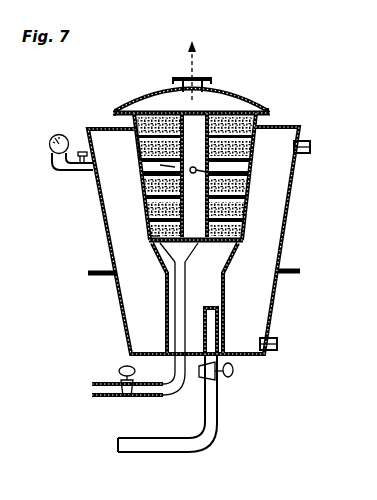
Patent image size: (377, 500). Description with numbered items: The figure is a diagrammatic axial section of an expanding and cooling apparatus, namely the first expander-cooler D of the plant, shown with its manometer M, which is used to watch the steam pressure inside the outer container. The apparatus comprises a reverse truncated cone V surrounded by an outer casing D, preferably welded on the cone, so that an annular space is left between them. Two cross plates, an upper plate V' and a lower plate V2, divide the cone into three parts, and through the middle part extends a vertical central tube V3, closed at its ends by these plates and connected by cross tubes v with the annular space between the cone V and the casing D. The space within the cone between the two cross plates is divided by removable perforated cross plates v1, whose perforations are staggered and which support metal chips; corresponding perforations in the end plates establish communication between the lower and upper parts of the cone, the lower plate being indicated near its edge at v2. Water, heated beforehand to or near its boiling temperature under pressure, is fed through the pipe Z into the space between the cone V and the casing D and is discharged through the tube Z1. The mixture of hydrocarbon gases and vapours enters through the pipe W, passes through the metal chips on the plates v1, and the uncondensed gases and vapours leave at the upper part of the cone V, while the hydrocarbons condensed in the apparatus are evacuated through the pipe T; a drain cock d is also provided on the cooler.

The manometer M is at (59, 135).
The dome cover of filter V' is at (191, 79).
The reverse truncated cone V is at (212, 166).
The cross tubes v is at (244, 177).
The removable perforated cross plates v1 is at (136, 150).
The filter bottom v2 is at (158, 232).
The cross plate V2 is at (174, 258).
The vertical central tube V3 is at (240, 212).
The outer casing D is at (279, 251).
The water feed pipe Z is at (306, 141).
The water discharge tube Z1 is at (272, 348).
The gas and vapour feed pipe W is at (143, 393).
The drain cock d is at (221, 378).
The condensate evacuation pipe T is at (183, 441).